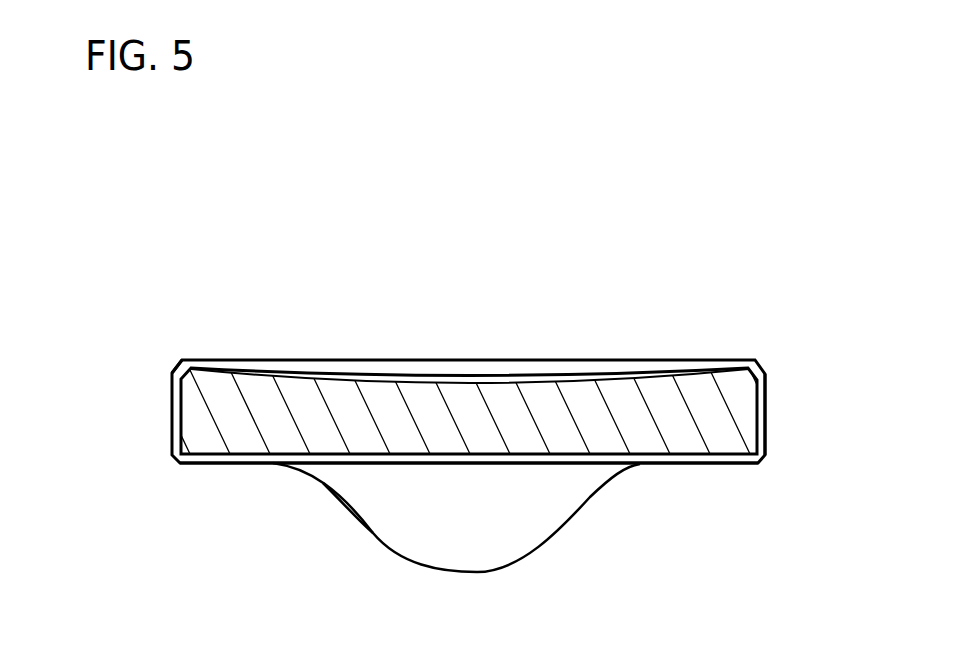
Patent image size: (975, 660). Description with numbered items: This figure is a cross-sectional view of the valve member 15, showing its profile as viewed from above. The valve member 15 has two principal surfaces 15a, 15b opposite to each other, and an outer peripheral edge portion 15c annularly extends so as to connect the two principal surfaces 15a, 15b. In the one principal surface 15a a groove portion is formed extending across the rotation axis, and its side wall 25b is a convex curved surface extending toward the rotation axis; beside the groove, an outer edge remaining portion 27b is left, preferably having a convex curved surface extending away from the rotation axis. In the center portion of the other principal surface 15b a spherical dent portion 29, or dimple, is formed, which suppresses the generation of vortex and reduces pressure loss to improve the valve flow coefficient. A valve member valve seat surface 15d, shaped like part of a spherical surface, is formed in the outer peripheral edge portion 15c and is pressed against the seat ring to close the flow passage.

The valve member 15 is at (668, 272).
The principal surface 15a is at (714, 464).
The principal surface 15b is at (714, 362).
The outer peripheral edge portion 15c is at (768, 411).
The valve member valve seat surface 15d is at (178, 362).
The spherical dent portion 29 is at (468, 378).
The side wall of the groove portion 25b is at (530, 522).
The outer edge remaining portion 27b is at (377, 535).